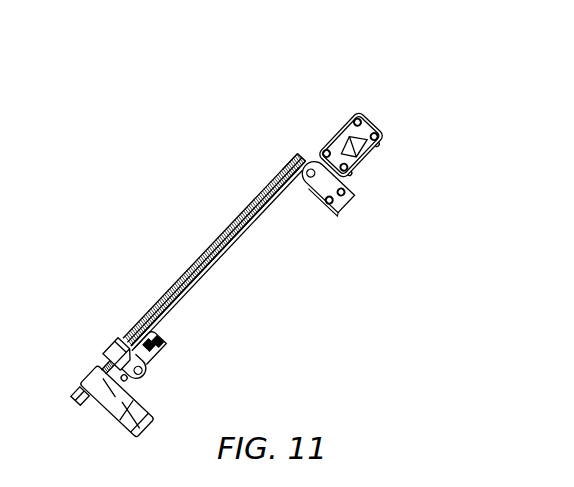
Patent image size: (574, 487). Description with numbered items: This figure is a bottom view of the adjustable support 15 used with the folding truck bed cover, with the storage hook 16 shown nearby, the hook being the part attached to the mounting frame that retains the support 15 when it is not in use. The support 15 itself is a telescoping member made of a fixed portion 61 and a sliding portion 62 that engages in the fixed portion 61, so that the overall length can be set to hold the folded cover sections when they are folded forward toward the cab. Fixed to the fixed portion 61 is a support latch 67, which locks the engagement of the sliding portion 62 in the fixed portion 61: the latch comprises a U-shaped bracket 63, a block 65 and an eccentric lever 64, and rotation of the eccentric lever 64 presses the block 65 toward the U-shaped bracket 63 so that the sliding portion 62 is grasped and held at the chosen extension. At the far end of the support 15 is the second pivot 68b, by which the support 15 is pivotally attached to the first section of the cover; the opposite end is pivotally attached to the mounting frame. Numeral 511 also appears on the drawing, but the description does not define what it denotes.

The adjustable support 15 is at (113, 125).
The storage hook 16 is at (110, 407).
The fixed portion 61 is at (268, 210).
The sliding portion 62 is at (245, 217).
The U-shaped bracket 63 is at (108, 348).
The eccentric lever 64 is at (155, 357).
The block 65 is at (124, 378).
The support latch 67 is at (110, 332).
The second pivot 68b is at (322, 139).
The rod end portion 511 is at (287, 165).